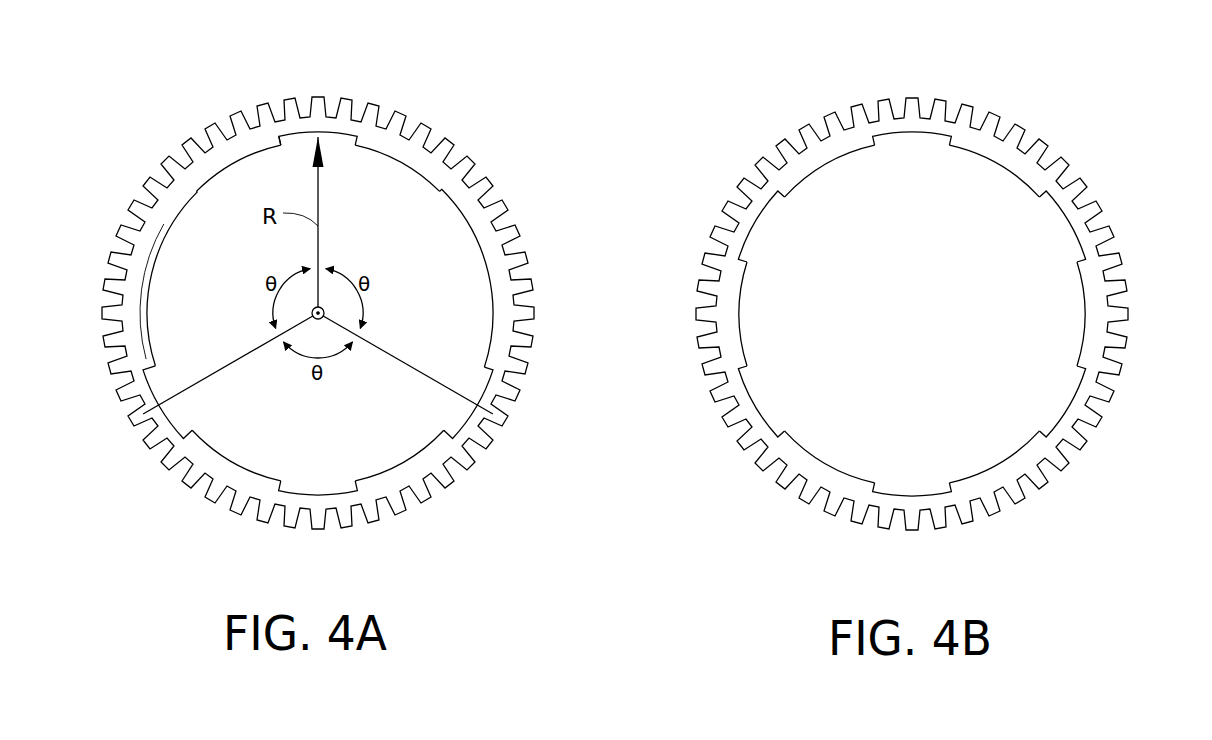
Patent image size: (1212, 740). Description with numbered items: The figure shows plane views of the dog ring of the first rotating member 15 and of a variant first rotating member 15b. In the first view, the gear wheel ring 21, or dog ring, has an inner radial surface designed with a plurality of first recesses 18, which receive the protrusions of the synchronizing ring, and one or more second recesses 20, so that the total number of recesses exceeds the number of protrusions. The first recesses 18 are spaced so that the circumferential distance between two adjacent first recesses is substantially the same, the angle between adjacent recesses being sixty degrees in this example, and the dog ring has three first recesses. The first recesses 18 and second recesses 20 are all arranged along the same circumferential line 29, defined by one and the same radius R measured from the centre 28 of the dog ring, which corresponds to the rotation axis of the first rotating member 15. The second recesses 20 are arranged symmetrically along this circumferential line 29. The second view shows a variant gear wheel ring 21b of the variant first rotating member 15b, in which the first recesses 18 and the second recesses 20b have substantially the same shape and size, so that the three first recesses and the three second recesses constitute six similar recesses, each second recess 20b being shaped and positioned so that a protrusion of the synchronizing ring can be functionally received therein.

In FIG. 4A, the first rotating member 15 is at (452, 94).
In FIG. 4B, the first rotating member variant 15b is at (1047, 94).
In FIG. 4A, the first recesses 18 is at (349, 130).
In FIG. 4B, the first recesses 18 is at (943, 137).
In FIG. 4A, the second recesses 20 is at (170, 227).
In FIG. 4B, the second recesses of variant 20b is at (765, 228).
In FIG. 4A, the gear wheel ring 21 is at (125, 290).
In FIG. 4B, the gear wheel ring variant 21b is at (735, 292).
In FIG. 4A, the centre 28 is at (313, 312).
In FIG. 4A, the circumferential line 29 is at (264, 135).